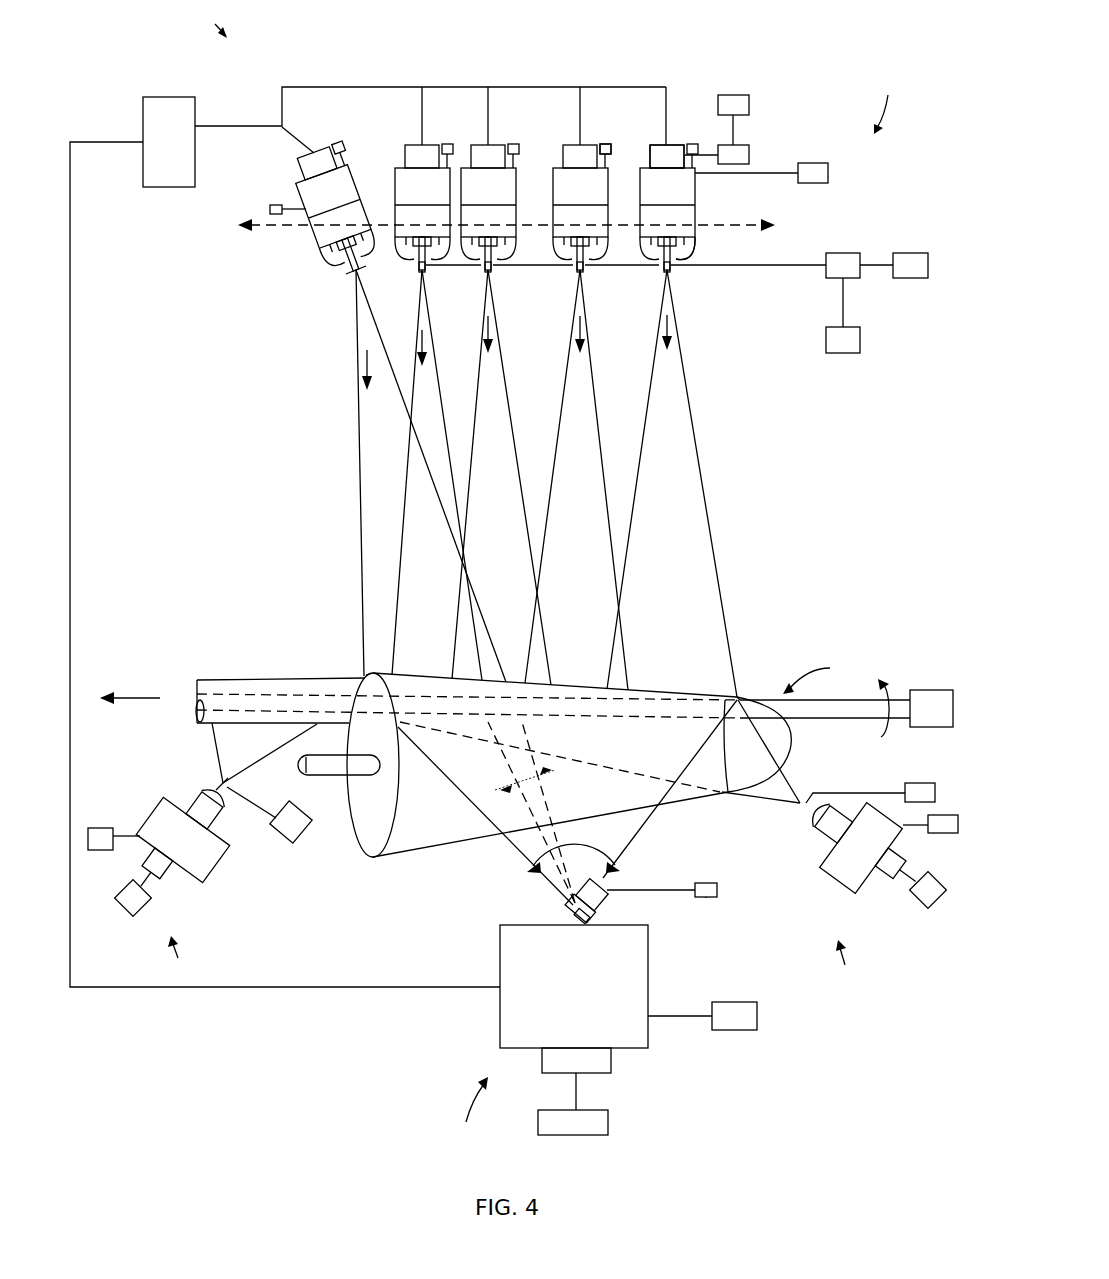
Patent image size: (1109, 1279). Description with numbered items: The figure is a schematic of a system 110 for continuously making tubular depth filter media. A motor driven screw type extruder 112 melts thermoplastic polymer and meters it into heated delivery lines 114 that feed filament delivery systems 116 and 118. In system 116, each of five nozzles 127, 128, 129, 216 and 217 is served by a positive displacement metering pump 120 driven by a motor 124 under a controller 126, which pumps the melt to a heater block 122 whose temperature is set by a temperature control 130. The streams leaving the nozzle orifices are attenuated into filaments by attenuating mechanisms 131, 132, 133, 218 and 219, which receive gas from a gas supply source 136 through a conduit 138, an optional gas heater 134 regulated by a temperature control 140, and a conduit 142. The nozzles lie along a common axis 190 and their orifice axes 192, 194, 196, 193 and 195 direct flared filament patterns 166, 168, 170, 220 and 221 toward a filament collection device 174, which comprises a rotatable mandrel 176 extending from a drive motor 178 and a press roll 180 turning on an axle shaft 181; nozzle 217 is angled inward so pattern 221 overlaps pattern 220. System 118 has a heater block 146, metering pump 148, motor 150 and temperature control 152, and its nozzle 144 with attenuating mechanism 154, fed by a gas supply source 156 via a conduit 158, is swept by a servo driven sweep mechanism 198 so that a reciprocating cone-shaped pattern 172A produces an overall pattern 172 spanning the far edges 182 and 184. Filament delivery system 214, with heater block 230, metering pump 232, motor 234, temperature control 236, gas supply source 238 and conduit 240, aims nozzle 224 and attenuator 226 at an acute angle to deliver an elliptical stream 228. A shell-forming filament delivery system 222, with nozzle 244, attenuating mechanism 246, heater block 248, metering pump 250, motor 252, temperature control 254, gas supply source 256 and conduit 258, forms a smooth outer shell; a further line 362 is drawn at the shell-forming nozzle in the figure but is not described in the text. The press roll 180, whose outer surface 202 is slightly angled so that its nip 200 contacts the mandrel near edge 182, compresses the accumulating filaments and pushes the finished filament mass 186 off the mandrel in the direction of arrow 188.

The system 110 is at (222, 30).
The extruder 112 is at (170, 97).
The heated delivery line 114 is at (240, 126).
The filament delivery system 116 is at (890, 100).
The filament delivery system 118 is at (468, 1113).
The metering pump 120 is at (678, 150).
The heater block 122 is at (675, 186).
The motor 124 is at (749, 153).
The controller 126 is at (733, 95).
The nozzle 127 is at (690, 238).
The nozzle 128 is at (598, 215).
The nozzle 129 is at (507, 220).
The temperature control 130 is at (605, 143).
The attenuating mechanism 131 is at (669, 273).
The attenuating mechanism 132 is at (582, 273).
The attenuating mechanism 133 is at (490, 273).
The gas heater 134 is at (845, 253).
The gas supply source 136 is at (912, 253).
The conduit 138 is at (870, 268).
The temperature control 140 is at (843, 353).
The conduit 142 is at (356, 283).
The nozzle 144 is at (610, 900).
The heater block 146 is at (650, 968).
The metering pump 148 is at (612, 1060).
The motor 150 is at (610, 1122).
The temperature control 152 is at (735, 1030).
The attenuating mechanism 154 is at (638, 888).
The gas supply source 156 is at (706, 883).
The conduit 158 is at (700, 897).
The filament pattern 166 is at (645, 533).
The filament pattern 168 is at (557, 536).
The filament pattern 170 is at (474, 543).
The filament pattern 172 is at (574, 853).
The reciprocating filament pattern 172A is at (530, 778).
The filament collection device 174 is at (859, 696).
The mandrel 176 is at (790, 716).
The drive motor 178 is at (935, 690).
The press roll 180 is at (430, 840).
The axle shaft 181 is at (318, 775).
The far edge 182 is at (745, 700).
The far edge 184 is at (362, 672).
The filament mass 186 is at (228, 680).
The arrow 188 is at (152, 696).
The common axis 190 is at (752, 222).
The axis 192 is at (672, 332).
The axis 193 is at (418, 342).
The axis 194 is at (605, 345).
The axis 195 is at (362, 355).
The axis 196 is at (520, 345).
The sweep mechanism 198 is at (578, 912).
The nip 200 is at (830, 668).
The outer surface 202 is at (380, 860).
The filament delivery system 214 is at (840, 955).
The nozzle 216 is at (412, 215).
The nozzle 217 is at (330, 232).
The attenuating mechanism 218 is at (422, 273).
The attenuating mechanism 219 is at (360, 272).
The filament pattern 220 is at (418, 452).
The filament pattern 221 is at (362, 415).
The shell-forming filament delivery system 222 is at (176, 950).
The nozzle 224 is at (810, 835).
The attenuating mechanism 226 is at (815, 800).
The filament pattern 228 is at (785, 808).
The heater block 230 is at (835, 885).
The metering pump 232 is at (906, 864).
The motor 234 is at (935, 905).
The temperature control 236 is at (945, 815).
The gas supply source 238 is at (922, 783).
The conduit 240 is at (860, 793).
The nozzle 244 is at (225, 818).
The attenuating mechanism 246 is at (208, 790).
The heater block 248 is at (222, 866).
The metering pump 250 is at (165, 870).
The motor 252 is at (138, 914).
The temperature control 254 is at (98, 828).
The gas supply source 256 is at (305, 835).
The conduit 258 is at (260, 758).
The sensor beam 362 is at (215, 745).